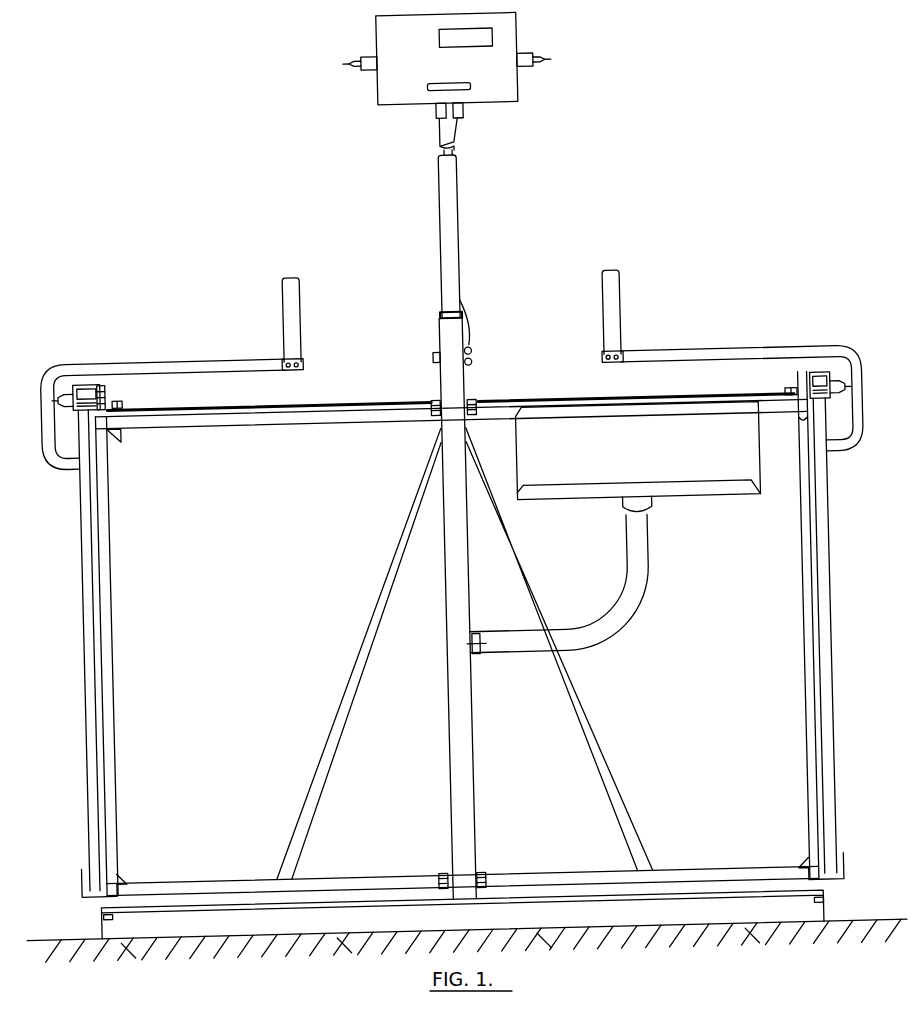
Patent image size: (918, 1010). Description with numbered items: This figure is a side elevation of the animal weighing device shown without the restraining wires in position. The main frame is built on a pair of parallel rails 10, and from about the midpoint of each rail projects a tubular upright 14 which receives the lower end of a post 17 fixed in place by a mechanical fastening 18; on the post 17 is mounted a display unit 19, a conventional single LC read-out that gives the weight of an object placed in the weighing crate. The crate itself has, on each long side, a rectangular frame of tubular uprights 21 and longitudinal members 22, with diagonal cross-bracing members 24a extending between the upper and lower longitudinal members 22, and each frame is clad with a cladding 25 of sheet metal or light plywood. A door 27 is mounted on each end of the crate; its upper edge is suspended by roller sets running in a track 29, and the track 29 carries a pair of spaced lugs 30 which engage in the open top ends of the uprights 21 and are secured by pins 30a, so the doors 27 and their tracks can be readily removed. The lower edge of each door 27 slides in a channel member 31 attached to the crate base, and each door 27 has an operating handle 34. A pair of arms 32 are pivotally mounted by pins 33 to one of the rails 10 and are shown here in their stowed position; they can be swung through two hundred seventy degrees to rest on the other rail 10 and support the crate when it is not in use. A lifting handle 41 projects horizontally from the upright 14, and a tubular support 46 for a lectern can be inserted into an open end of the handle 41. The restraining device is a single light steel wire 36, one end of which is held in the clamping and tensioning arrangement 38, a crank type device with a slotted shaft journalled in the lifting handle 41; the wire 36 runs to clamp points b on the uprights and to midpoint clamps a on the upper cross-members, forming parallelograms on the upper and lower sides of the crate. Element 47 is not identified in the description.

The rail 10 is at (561, 899).
The upright 14 is at (447, 722).
The post 17 is at (450, 247).
The mechanical fastening 18 is at (481, 360).
The display unit 19 is at (521, 89).
The tubular upright 21 is at (112, 712).
The longitudinal member 22 is at (296, 421).
The diagonal cross-bracing member 24a is at (346, 689).
The cladding 25 is at (251, 623).
The door 27 is at (84, 735).
The track 29 is at (90, 376).
The lug 30 is at (112, 380).
The pin 30a is at (118, 432).
The channel member 31 is at (76, 880).
The arm 32 is at (224, 899).
The pin 33 is at (97, 893).
The operating handle 34 is at (214, 355).
The wire 36 is at (305, 402).
The clamping/tensioning arrangement 38 is at (480, 655).
The lifting handle 41 is at (514, 632).
The tubular support 46 is at (693, 469).
The elbow pipe 47 is at (651, 596).
The midpoint clamp a is at (122, 403).
The clamp point b is at (437, 402).